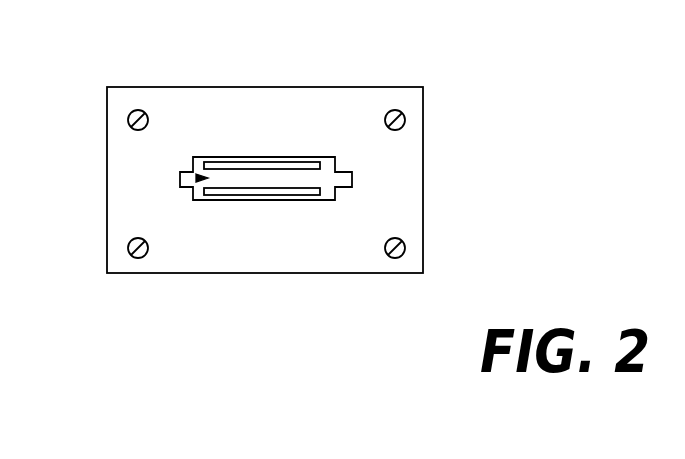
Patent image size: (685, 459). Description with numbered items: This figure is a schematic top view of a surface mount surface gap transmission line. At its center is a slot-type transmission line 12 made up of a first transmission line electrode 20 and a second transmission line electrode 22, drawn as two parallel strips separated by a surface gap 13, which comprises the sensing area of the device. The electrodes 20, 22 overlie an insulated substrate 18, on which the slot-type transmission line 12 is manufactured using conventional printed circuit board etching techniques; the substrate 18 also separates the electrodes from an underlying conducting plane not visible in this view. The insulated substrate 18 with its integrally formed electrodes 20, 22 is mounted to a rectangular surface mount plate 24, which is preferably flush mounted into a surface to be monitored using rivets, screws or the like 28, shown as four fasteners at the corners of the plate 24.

The slot-type transmission line 12 is at (237, 179).
The surface gap 13 is at (200, 178).
The insulated substrate 18 is at (330, 178).
The first transmission line electrode 20 is at (198, 159).
The second transmission line electrode 22 is at (197, 197).
The surface mount plate 24 is at (320, 88).
The rivets, screws or the like 28 is at (405, 120).